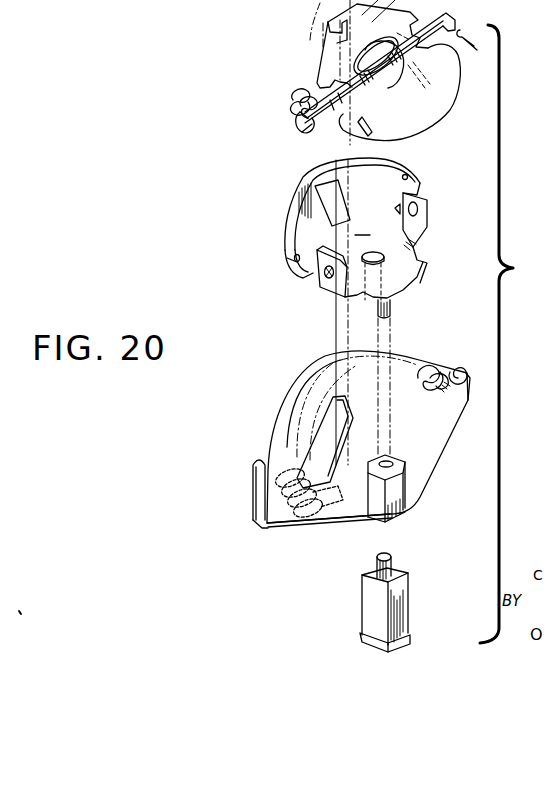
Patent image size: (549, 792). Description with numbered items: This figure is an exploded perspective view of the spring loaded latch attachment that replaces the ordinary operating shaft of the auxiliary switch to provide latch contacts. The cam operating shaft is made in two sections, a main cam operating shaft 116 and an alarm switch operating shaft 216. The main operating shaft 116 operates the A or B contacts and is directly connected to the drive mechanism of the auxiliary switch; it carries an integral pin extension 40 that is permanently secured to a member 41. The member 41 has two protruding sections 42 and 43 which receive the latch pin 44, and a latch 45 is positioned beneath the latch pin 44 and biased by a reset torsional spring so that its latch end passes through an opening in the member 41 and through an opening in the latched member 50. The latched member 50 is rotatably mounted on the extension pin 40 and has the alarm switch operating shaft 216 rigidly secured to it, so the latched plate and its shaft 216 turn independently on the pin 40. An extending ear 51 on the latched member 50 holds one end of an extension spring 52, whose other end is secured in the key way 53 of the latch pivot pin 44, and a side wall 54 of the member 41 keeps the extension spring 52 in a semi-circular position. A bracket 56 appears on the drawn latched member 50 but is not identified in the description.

The integral pin extension 40 is at (395, 305).
The member 41 is at (368, 250).
The protruding section 42 is at (428, 215).
The protruding section 43 is at (326, 294).
The latch pin 44 is at (330, 125).
The latch 45 is at (450, 98).
The latched member 50 is at (282, 398).
The extending ear 51 is at (460, 368).
The extension spring 52 is at (296, 110).
The key way 53 is at (302, 130).
The side wall 54 is at (290, 264).
The bracket 56 is at (253, 472).
The cam operating shaft 116 is at (410, 604).
The alarm switch operating shaft 216 is at (408, 518).